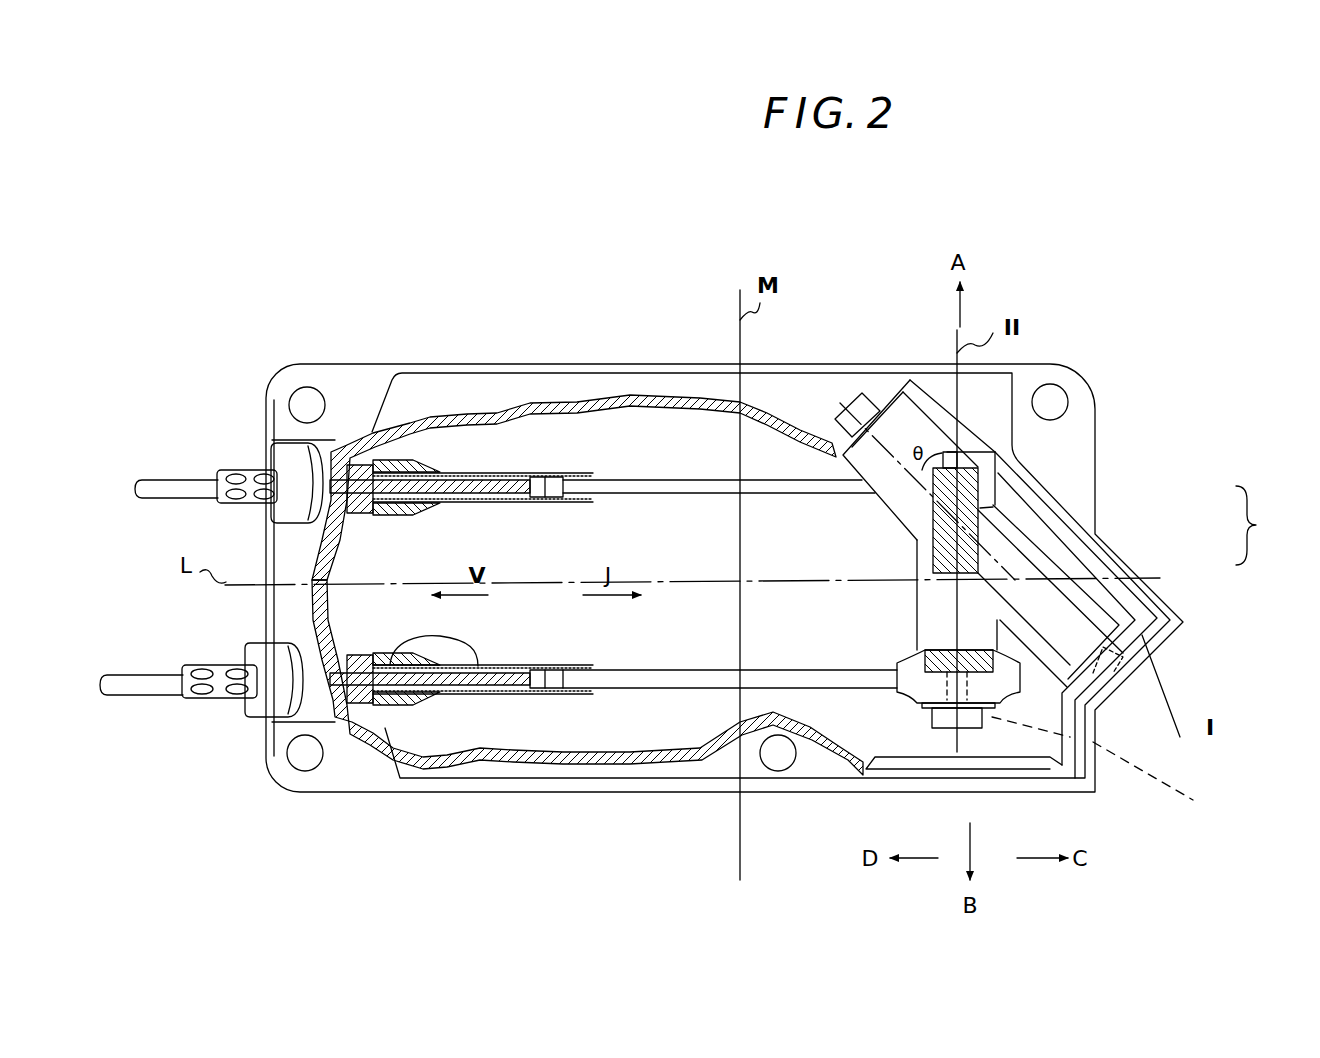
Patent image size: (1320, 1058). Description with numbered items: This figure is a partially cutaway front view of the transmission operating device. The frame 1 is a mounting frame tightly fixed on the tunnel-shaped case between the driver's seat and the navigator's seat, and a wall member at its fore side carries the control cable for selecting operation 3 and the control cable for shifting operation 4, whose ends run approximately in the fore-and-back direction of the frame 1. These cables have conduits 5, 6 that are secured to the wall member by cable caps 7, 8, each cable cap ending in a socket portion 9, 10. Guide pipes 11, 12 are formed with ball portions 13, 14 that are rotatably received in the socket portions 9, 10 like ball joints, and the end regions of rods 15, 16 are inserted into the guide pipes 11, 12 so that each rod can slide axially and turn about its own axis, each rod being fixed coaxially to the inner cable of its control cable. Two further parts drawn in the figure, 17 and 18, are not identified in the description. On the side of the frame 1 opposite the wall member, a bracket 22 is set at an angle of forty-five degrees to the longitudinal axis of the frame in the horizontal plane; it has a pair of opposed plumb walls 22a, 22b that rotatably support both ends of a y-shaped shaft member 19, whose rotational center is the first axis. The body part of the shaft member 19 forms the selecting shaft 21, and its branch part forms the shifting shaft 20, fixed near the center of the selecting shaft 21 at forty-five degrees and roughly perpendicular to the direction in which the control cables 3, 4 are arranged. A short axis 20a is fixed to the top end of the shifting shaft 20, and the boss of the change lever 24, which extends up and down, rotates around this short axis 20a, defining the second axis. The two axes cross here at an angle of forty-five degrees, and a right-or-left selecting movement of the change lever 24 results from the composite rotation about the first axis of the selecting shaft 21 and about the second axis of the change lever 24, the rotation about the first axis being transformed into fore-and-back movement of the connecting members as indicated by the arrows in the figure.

The frame 1 is at (823, 392).
The control cable for selecting operation 3 is at (230, 447).
The control cable for shifting operation 4 is at (213, 723).
The conduit 5 is at (187, 482).
The conduit 6 is at (148, 688).
The cable cap 7 is at (393, 457).
The cable cap 8 is at (350, 705).
The socket portion 9 is at (440, 467).
The socket portion 10 is at (407, 703).
The guide pipe 11 is at (560, 476).
The guide pipe 12 is at (563, 697).
The ball portion 13 is at (427, 417).
The ball portion 14 is at (493, 697).
The rod 15 is at (667, 481).
The rod 16 is at (673, 688).
The bushing 17 is at (363, 455).
The second sleeve 18 is at (470, 697).
The shaft member 19 is at (1100, 569).
The shifting shaft 20 is at (963, 607).
The short axis 20a is at (1109, 765).
The selecting shaft 21 is at (1085, 618).
The bracket 22 is at (1060, 505).
The plumb wall 22a is at (1148, 640).
The plumb wall 22b is at (887, 382).
The change lever 24 is at (933, 688).